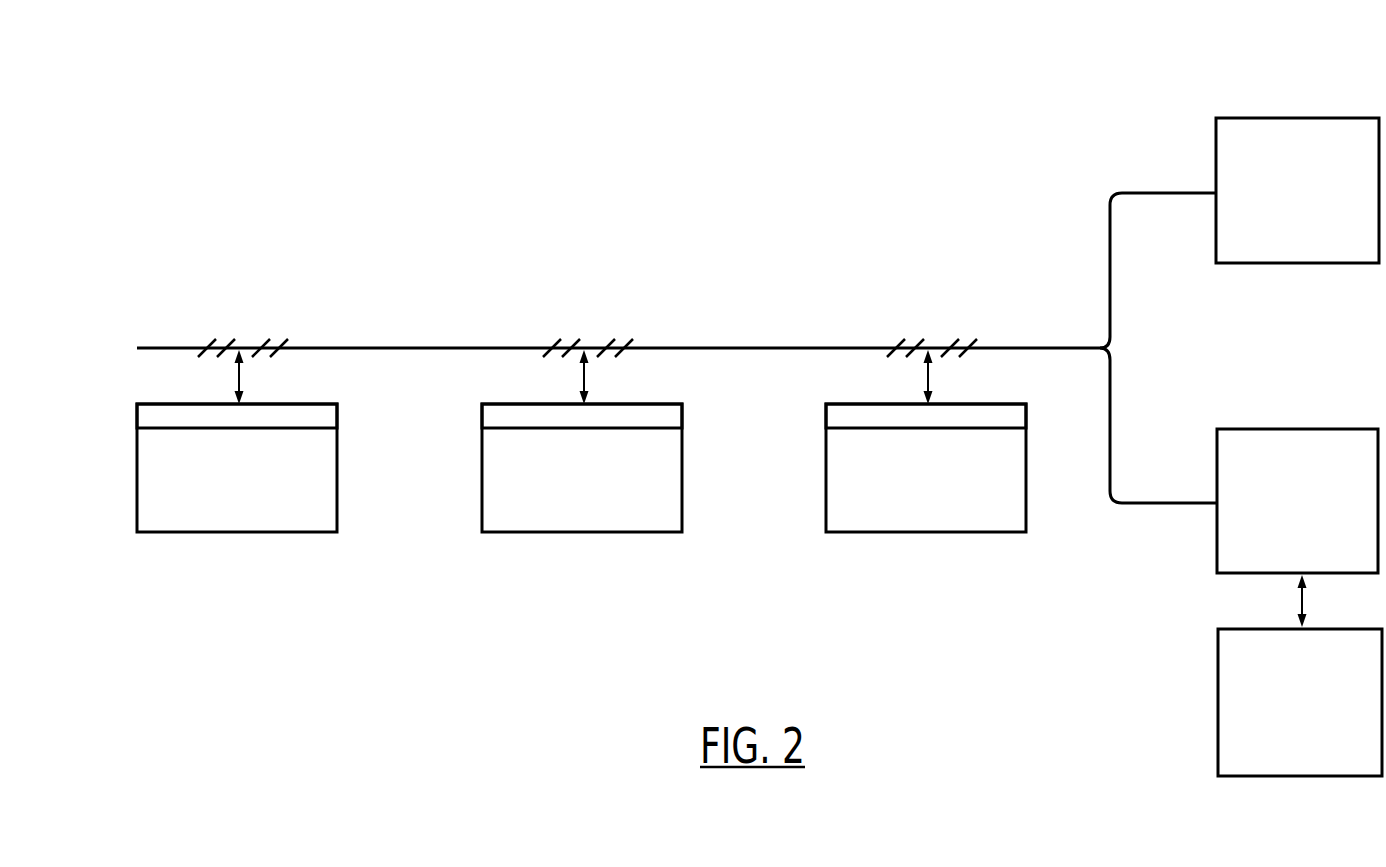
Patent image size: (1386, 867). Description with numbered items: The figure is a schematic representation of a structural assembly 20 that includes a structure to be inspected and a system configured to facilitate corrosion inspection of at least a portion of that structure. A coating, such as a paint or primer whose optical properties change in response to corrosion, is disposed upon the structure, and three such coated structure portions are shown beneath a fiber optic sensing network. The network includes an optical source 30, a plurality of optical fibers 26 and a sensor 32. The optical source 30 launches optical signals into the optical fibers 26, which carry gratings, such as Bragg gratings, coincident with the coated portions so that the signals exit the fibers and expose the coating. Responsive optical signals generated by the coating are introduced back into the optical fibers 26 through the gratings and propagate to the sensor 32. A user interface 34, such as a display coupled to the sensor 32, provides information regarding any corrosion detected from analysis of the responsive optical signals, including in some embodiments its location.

The structural assembly 20 is at (728, 230).
The optical fibers 26 is at (757, 347).
The optical source 30 is at (1296, 118).
The sensor 32 is at (1297, 429).
The user interface 34 is at (1330, 629).